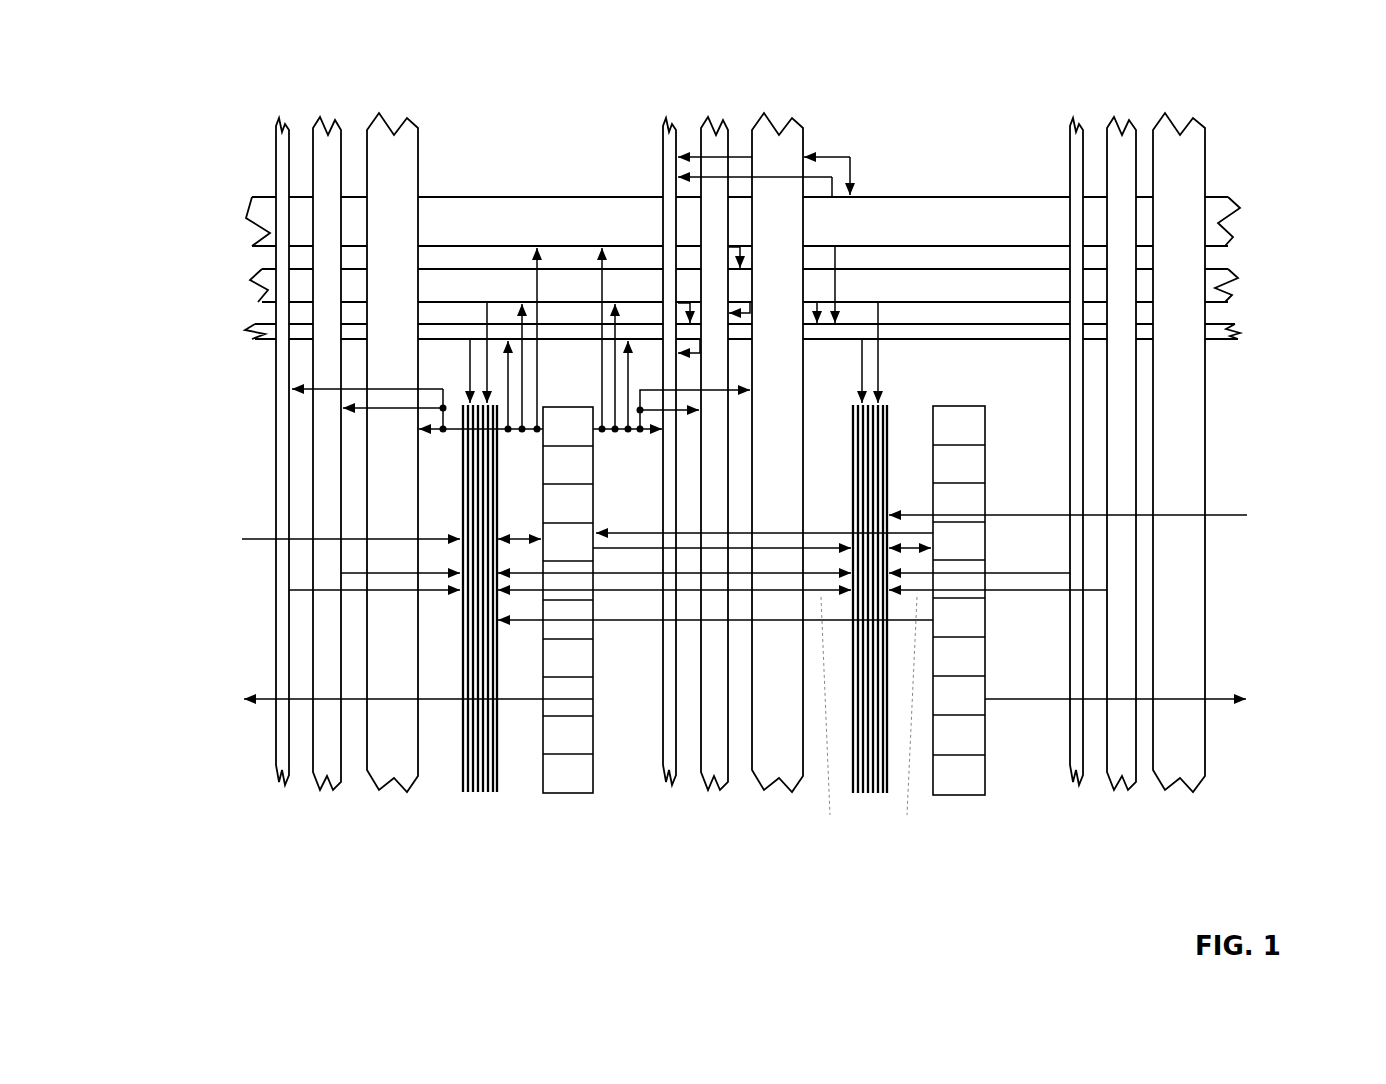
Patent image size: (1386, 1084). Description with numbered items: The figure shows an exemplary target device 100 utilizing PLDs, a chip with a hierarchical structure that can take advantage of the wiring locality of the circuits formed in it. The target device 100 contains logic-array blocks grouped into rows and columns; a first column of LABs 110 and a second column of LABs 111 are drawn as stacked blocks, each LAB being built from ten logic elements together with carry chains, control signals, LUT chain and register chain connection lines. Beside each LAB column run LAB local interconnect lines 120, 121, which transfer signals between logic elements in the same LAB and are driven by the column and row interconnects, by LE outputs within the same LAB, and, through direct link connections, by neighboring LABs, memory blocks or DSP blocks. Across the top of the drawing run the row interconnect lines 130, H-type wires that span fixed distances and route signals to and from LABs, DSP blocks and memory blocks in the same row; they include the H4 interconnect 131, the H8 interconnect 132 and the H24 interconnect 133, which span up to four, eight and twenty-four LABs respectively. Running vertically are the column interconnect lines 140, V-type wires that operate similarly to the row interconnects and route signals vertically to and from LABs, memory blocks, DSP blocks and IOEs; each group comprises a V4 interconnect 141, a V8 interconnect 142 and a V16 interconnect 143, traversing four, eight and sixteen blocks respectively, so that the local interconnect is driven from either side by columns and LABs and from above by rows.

The target device 100 is at (181, 99).
The first column of LABs 110 is at (563, 797).
The second column of LABs 111 is at (946, 798).
The LAB local interconnect line 120 is at (470, 793).
The LAB local interconnect line 121 is at (862, 795).
The row interconnect lines 130 is at (228, 183).
The H4 interconnect 131 is at (1228, 344).
The H8 interconnect 132 is at (1232, 286).
The H24 interconnect 133 is at (1237, 215).
The column interconnect lines 140 is at (425, 117).
The V4 interconnect 141 is at (273, 782).
The V8 interconnect 142 is at (320, 786).
The V16 interconnect 143 is at (382, 790).